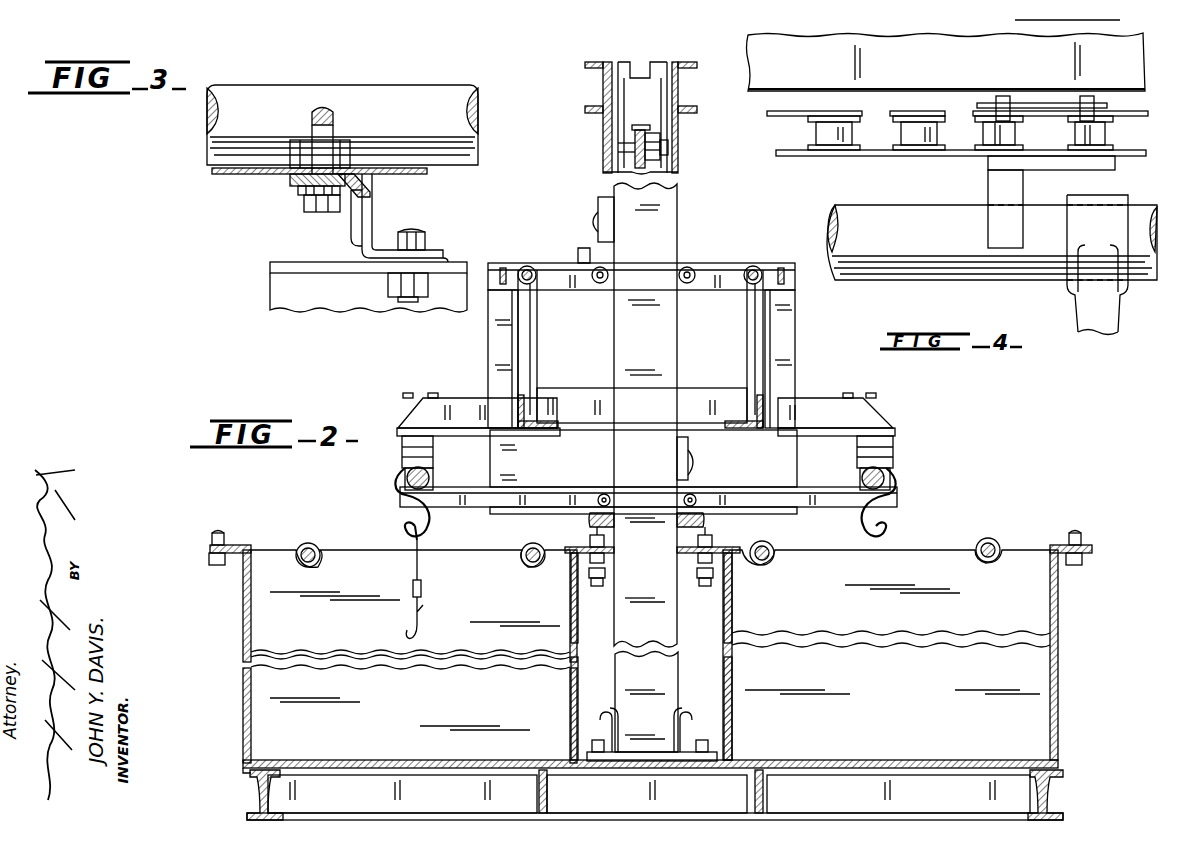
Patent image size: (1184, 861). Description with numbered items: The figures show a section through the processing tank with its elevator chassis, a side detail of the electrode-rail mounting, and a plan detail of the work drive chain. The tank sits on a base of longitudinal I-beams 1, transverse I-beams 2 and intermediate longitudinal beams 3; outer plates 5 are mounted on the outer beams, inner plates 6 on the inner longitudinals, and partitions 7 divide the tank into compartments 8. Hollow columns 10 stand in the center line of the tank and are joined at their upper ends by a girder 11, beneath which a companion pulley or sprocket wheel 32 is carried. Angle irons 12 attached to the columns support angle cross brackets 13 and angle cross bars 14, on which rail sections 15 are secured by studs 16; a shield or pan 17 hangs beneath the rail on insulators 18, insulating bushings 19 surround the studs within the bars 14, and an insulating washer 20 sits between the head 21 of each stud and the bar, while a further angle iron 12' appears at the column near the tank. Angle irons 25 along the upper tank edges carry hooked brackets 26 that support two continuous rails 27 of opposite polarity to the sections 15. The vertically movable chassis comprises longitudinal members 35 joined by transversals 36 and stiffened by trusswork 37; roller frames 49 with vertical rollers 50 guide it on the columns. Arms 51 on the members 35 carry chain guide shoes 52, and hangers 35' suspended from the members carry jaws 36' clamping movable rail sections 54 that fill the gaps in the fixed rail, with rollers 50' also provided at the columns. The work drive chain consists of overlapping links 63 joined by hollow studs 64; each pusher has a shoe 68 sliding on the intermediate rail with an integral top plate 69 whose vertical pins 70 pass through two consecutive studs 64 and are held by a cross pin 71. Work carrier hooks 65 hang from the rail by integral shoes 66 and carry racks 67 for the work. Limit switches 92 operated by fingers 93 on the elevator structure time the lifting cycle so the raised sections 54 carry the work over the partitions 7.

In FIG. 2, the longitudinal I-beams 1 is at (1050, 782).
In FIG. 2, the transverse I-beams 2 is at (892, 791).
In FIG. 2, the intermediate longitudinal beams 3 is at (765, 788).
In FIG. 2, the outer plates 5 is at (238, 630).
In FIG. 2, the inner plates 6 is at (736, 600).
In FIG. 2, the partitions 7 is at (258, 692).
In FIG. 2, the compartments 8 is at (928, 565).
In FIG. 2, the columns 10 is at (660, 215).
In FIG. 2, the girder 11 is at (600, 77).
In FIG. 3, the angle irons 12 is at (336, 287).
In FIG. 2, the column housing 12' is at (652, 637).
In FIG. 3, the angle cross brackets 13 is at (375, 218).
In FIG. 3, the angle cross bars 14 is at (355, 238).
In FIG. 3, the rail sections 15 is at (418, 100).
In FIG. 2, the rail sections 15 is at (1056, 668).
In FIG. 3, the studs 16 is at (322, 108).
In FIG. 3, the shield or pan 17 is at (424, 174).
In FIG. 3, the insulators 18 is at (345, 142).
In FIG. 3, the insulating bushings 19 is at (290, 180).
In FIG. 3, the insulating washer 20 is at (298, 192).
In FIG. 3, the head 21 is at (310, 208).
In FIG. 2, the angle irons 25 is at (207, 560).
In FIG. 2, the hooked brackets 26 is at (262, 540).
In FIG. 2, the rails 27 is at (308, 543).
In FIG. 2, the companion pulley or sprocket wheel 32 is at (635, 142).
In FIG. 4, the longitudinal members 35 is at (923, 55).
In FIG. 2, the longitudinal members 35 is at (625, 359).
In FIG. 2, the hangers 35' is at (597, 440).
In FIG. 2, the transversals 36 is at (642, 384).
In FIG. 2, the jaws 36' is at (646, 516).
In FIG. 2, the trusswork 37 is at (765, 330).
In FIG. 2, the roller frames 49 is at (715, 268).
In FIG. 2, the vertical rollers 50 is at (640, 292).
In FIG. 2, the rollers 50' is at (677, 514).
In FIG. 2, the outwardly extending arms 51 is at (840, 402).
In FIG. 2, the chain guide shoe 52 is at (893, 436).
In FIG. 4, the rail sections 54 is at (847, 215).
In FIG. 2, the rail sections 54 is at (404, 490).
In FIG. 4, the overlapping links 63 is at (975, 111).
In FIG. 4, the hollow studs 64 is at (990, 134).
In FIG. 4, the work carrier hooks 65 is at (1078, 325).
In FIG. 2, the work carrier hooks 65 is at (430, 536).
In FIG. 4, the shoes 66 is at (1100, 195).
In FIG. 2, the shoes 66 is at (862, 468).
In FIG. 2, the racks 67 is at (422, 600).
In FIG. 4, the shoe 68 is at (988, 222).
In FIG. 4, the top plate 69 is at (1000, 165).
In FIG. 4, the vertical pins 70 is at (1003, 97).
In FIG. 4, the cross pin 71 is at (1040, 103).
In FIG. 2, the limit switches 92 is at (598, 205).
In FIG. 2, the fingers 93 is at (586, 255).